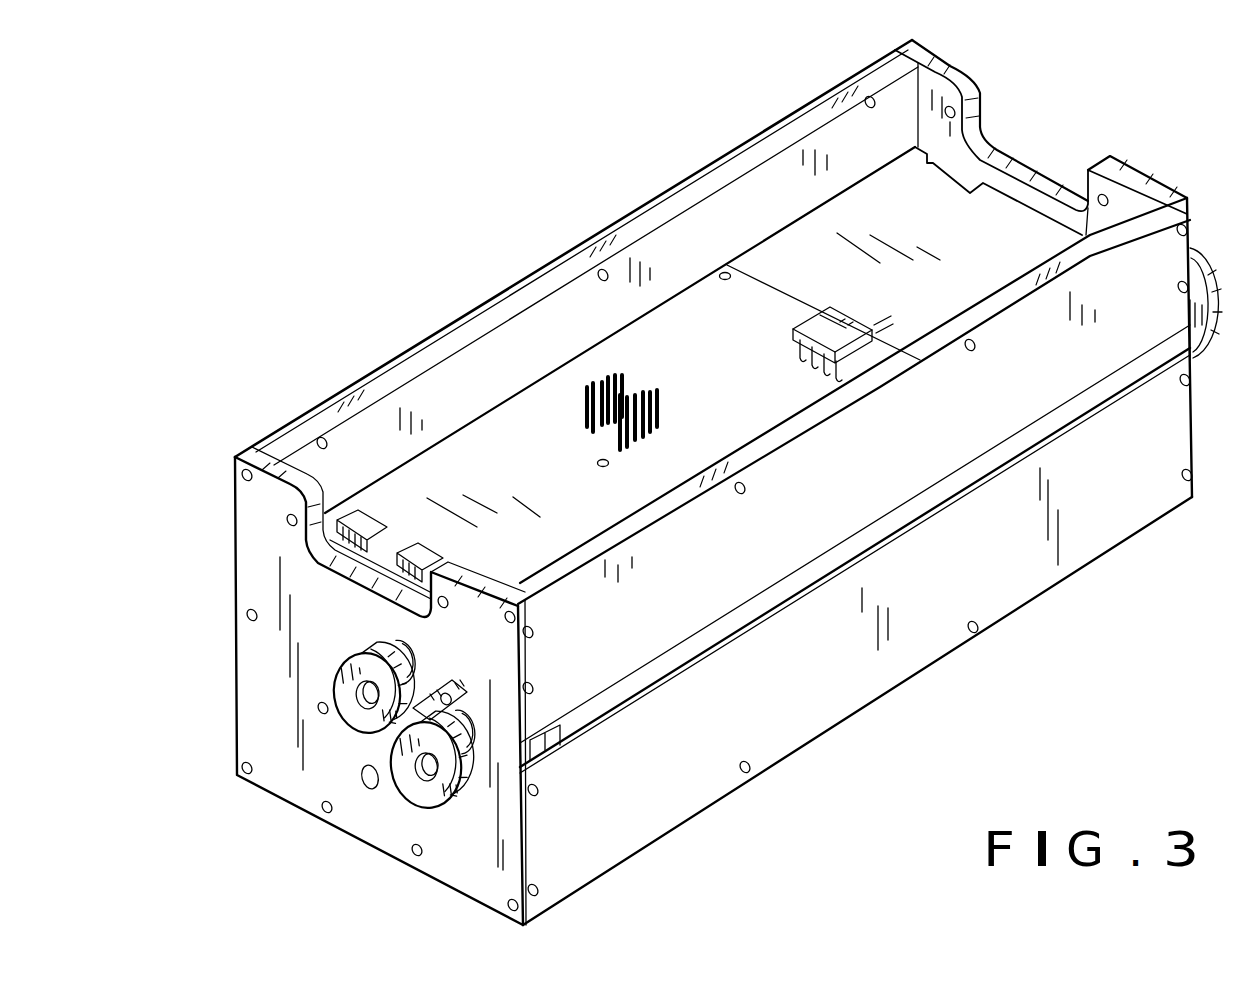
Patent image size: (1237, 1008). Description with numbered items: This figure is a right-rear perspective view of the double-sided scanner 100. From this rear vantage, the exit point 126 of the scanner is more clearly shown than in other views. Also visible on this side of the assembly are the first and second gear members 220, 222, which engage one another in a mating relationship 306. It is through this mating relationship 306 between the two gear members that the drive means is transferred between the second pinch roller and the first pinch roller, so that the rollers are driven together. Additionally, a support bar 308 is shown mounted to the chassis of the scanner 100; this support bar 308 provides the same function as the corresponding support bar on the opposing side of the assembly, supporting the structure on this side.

The double-sided scanner 100 is at (459, 279).
The exit point 126 is at (768, 600).
The first gear member 220 is at (334, 693).
The second gear member 222 is at (428, 795).
The mating relationship 306 is at (388, 730).
The support bar 308 is at (467, 693).